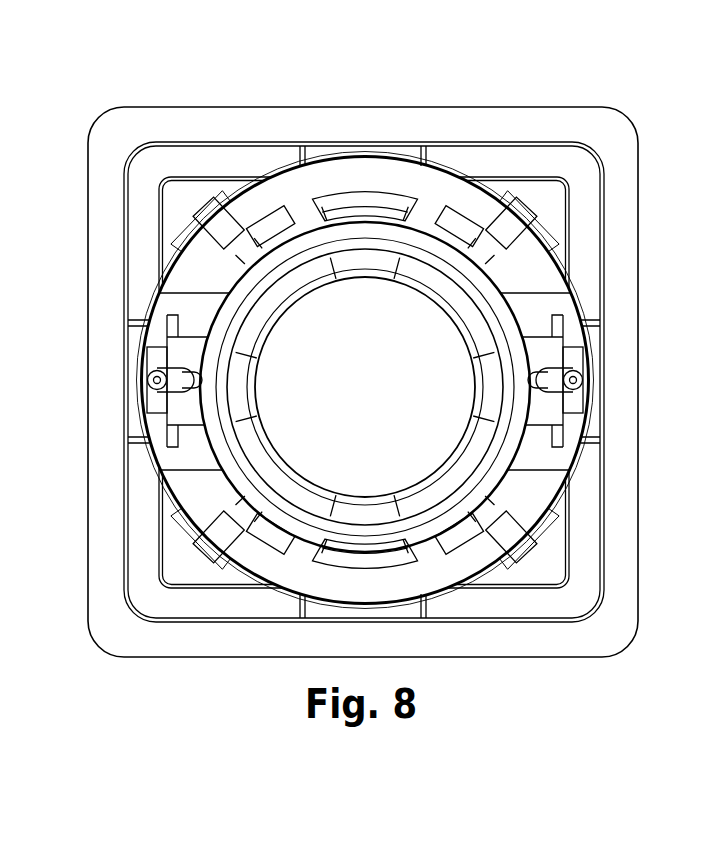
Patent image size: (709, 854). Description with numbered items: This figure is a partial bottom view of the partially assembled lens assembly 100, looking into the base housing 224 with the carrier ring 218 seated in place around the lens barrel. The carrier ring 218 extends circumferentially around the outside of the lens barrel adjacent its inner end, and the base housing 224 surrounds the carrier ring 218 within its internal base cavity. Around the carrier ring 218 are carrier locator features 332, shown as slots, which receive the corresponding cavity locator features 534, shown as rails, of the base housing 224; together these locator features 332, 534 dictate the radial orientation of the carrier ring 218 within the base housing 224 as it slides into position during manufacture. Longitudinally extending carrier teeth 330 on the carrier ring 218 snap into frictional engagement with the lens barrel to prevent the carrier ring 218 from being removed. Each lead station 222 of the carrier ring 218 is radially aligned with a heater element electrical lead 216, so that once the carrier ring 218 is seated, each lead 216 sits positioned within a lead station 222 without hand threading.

The lens assembly 100 is at (612, 665).
The heater element electrical lead 216 is at (596, 380).
The carrier ring 218 is at (300, 186).
The lead station 222 is at (589, 307).
The base housing 224 is at (613, 95).
The carrier tooth 330 is at (356, 184).
The carrier locator feature 332 is at (238, 176).
The cavity locator feature 534 is at (212, 198).